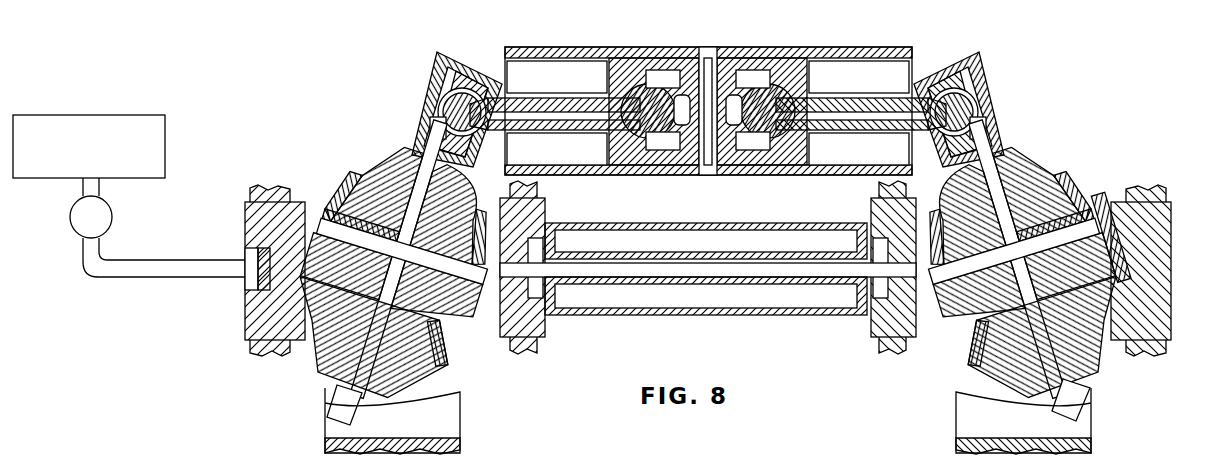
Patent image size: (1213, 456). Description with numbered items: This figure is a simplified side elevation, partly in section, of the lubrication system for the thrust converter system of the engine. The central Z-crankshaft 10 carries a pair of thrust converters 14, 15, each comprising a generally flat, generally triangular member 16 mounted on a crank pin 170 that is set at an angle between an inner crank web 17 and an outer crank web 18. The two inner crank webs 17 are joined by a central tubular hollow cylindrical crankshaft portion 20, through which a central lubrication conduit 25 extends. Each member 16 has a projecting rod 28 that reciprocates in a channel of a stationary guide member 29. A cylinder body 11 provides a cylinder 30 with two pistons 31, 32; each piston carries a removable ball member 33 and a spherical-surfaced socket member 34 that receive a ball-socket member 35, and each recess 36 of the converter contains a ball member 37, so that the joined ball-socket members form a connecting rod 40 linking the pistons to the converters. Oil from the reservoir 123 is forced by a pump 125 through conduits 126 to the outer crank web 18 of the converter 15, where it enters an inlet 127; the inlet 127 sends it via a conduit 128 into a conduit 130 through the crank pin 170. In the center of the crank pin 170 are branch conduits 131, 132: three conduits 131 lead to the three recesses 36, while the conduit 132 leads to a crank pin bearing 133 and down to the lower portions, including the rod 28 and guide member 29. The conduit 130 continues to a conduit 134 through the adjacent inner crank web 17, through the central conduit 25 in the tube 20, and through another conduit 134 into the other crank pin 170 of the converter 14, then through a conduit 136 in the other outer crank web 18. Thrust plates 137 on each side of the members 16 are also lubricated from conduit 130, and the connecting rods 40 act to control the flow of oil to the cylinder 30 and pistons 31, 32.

The crankshaft 10 is at (675, 320).
The cylinder body 11 is at (834, 47).
The thrust converter 14 is at (1042, 158).
The thrust converter 15 is at (368, 148).
The triangular member 16 is at (496, 194).
The inner crank web 17 is at (527, 345).
The outer crank web 18 is at (245, 208).
The central tubular hollow cylindrical crankshaft portion 20 is at (763, 317).
The central lubrication conduit 25 is at (627, 268).
The projecting rod 28 is at (325, 407).
The stationary guide member 29 is at (455, 421).
The cylinder 30 is at (875, 160).
The piston 31 is at (684, 60).
The piston 32 is at (732, 58).
The ball member 33 is at (643, 82).
The spherical-surfaced socket member 34 is at (625, 140).
The ball-socket member 35 is at (628, 95).
The recess 36 is at (440, 84).
The ball member 37 is at (975, 100).
The connecting rod 40 is at (537, 96).
The reservoir 123 is at (165, 122).
The pump 125 is at (71, 229).
The conduit 126 is at (123, 278).
The inlet 127 is at (250, 283).
The conduit 128 is at (258, 253).
The conduit 130 is at (1064, 252).
The branch conduit 131 is at (409, 220).
The branch conduit 132 is at (389, 295).
The crank pin bearing 133 is at (708, 344).
The conduit 134 is at (930, 345).
The conduit 136 is at (1100, 210).
The thrust plate 137 is at (342, 190).
The crank pin 170 is at (319, 226).